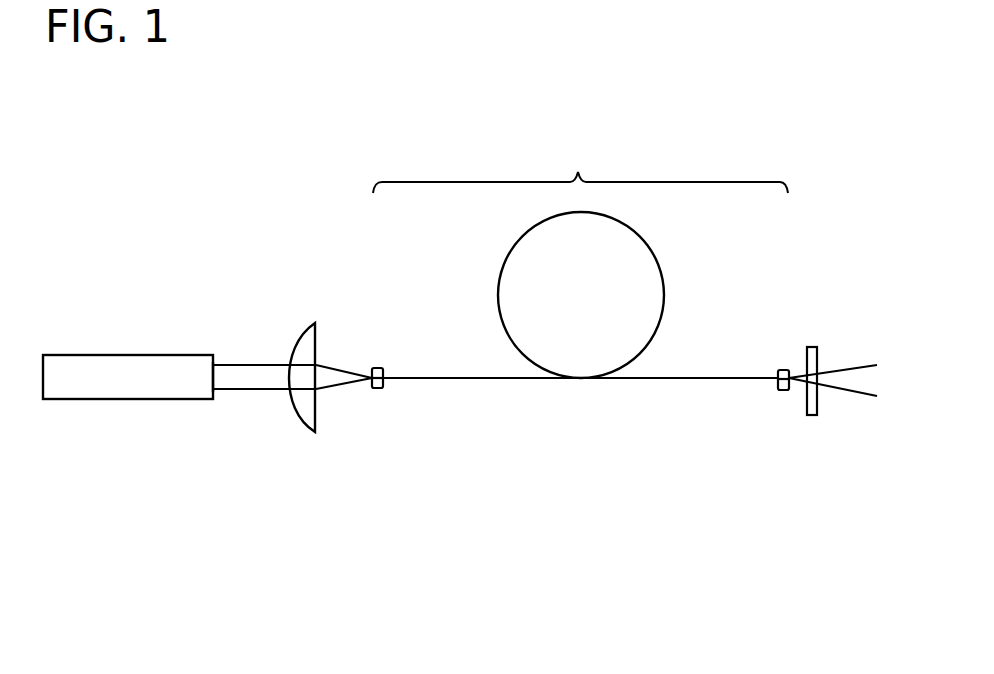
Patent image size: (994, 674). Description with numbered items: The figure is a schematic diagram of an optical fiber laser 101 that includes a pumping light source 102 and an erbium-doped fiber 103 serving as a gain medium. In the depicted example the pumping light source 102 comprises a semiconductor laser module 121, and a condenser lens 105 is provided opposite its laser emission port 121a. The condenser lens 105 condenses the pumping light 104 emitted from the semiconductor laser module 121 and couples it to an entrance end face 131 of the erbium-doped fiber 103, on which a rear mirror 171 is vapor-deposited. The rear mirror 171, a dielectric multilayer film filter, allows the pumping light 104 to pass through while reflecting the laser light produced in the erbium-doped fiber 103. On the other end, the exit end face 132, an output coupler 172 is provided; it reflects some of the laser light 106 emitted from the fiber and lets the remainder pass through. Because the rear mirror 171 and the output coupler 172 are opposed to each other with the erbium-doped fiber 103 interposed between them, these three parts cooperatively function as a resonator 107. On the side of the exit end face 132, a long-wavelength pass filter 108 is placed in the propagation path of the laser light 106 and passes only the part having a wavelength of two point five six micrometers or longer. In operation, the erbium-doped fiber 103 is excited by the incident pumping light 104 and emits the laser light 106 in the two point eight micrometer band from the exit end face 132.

The optical fiber laser 101 is at (779, 153).
The pumping light source 102 is at (180, 296).
The erbium-doped fiber 103 is at (497, 295).
The pumping light 104 is at (252, 383).
The condenser lens 105 is at (312, 333).
The laser light 106 is at (834, 376).
The resonator 107 is at (580, 163).
The long-wavelength pass filter 108 is at (810, 349).
The semiconductor laser module 121 is at (130, 366).
The laser emission port 121a is at (214, 373).
The entrance end face 131 is at (381, 369).
The exit end face 132 is at (779, 372).
The rear mirror 171 is at (377, 389).
The output coupler 172 is at (785, 391).